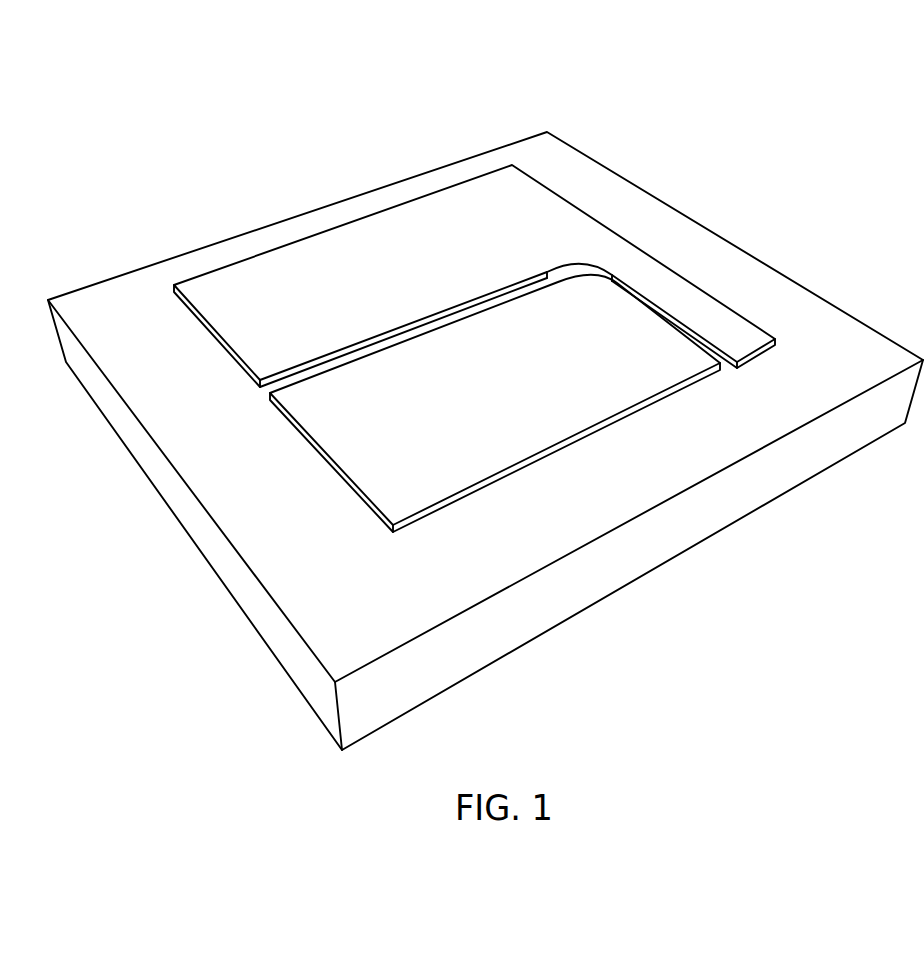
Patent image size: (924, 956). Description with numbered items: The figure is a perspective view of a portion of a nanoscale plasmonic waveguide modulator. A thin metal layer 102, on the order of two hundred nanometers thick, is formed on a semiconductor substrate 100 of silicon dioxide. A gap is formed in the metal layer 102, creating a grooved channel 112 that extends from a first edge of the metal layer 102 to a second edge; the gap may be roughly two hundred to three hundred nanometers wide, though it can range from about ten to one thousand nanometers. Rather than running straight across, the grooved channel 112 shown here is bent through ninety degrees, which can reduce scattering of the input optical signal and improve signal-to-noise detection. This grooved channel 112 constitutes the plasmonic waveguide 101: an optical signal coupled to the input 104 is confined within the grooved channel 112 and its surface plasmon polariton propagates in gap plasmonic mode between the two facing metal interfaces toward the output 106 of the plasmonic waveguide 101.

The semiconductor substrate 100 is at (285, 562).
The plasmonic waveguide 101 is at (485, 398).
The metal layer 102 is at (394, 223).
The input 104 is at (263, 390).
The output 106 is at (725, 366).
The grooved channel 112 is at (618, 283).